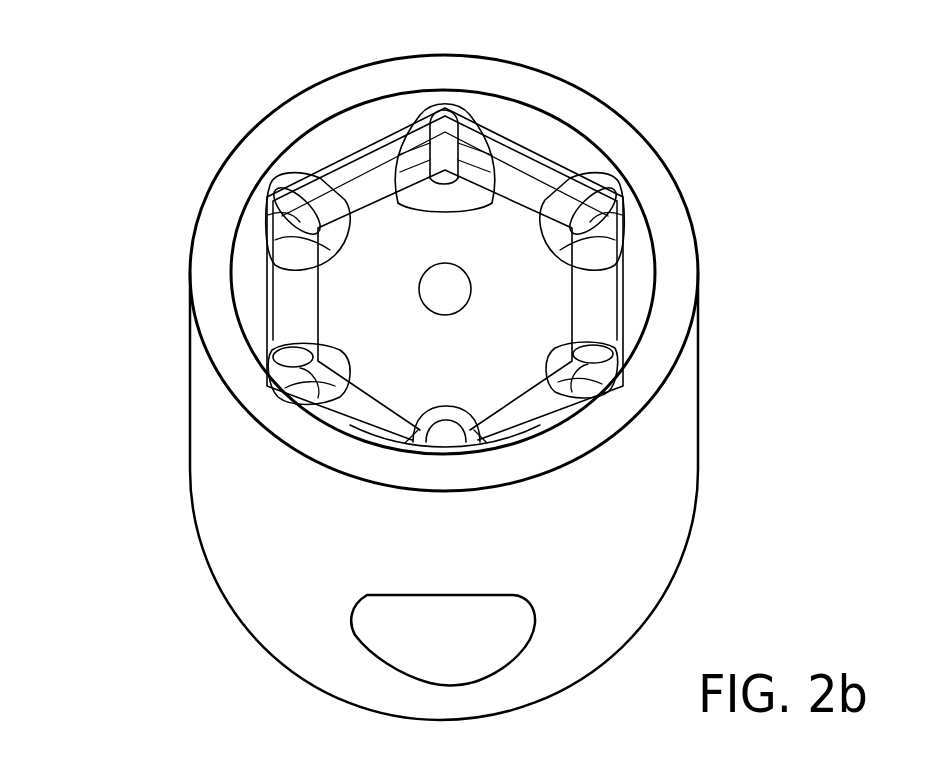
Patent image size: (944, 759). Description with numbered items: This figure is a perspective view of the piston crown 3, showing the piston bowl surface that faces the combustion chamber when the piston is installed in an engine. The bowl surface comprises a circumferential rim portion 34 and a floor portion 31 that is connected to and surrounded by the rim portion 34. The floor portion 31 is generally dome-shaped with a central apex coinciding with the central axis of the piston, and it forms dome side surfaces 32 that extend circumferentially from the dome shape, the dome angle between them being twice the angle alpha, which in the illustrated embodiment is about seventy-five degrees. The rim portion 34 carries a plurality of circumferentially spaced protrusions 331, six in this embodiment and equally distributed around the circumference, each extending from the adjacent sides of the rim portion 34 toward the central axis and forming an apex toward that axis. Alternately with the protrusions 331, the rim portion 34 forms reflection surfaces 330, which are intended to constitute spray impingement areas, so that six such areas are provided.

The piston crown 3 is at (108, 67).
The floor portion 31 is at (442, 293).
The dome side surfaces 32 is at (300, 342).
The circumferential rim portion 34 is at (668, 232).
The reflection surfaces 330 is at (356, 192).
The protrusions 331 is at (443, 130).